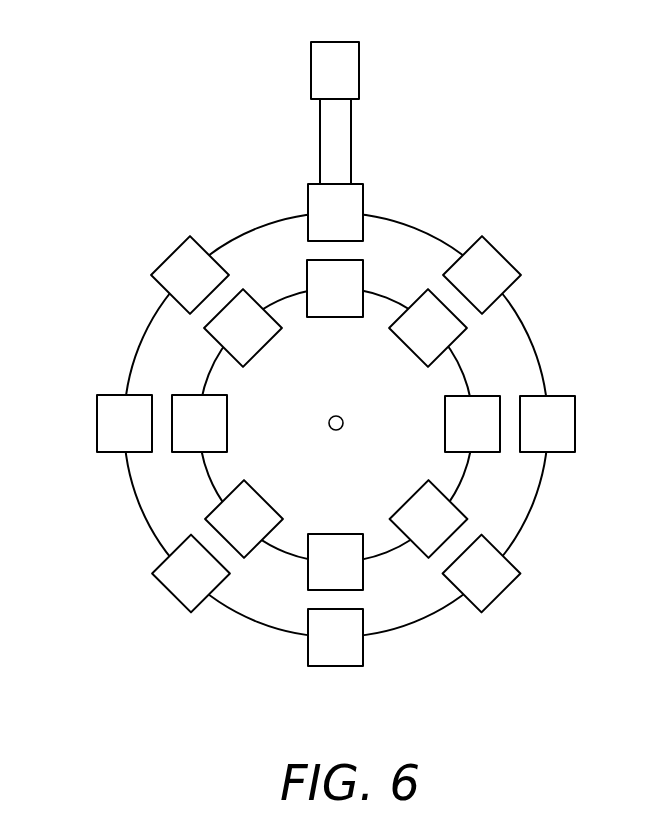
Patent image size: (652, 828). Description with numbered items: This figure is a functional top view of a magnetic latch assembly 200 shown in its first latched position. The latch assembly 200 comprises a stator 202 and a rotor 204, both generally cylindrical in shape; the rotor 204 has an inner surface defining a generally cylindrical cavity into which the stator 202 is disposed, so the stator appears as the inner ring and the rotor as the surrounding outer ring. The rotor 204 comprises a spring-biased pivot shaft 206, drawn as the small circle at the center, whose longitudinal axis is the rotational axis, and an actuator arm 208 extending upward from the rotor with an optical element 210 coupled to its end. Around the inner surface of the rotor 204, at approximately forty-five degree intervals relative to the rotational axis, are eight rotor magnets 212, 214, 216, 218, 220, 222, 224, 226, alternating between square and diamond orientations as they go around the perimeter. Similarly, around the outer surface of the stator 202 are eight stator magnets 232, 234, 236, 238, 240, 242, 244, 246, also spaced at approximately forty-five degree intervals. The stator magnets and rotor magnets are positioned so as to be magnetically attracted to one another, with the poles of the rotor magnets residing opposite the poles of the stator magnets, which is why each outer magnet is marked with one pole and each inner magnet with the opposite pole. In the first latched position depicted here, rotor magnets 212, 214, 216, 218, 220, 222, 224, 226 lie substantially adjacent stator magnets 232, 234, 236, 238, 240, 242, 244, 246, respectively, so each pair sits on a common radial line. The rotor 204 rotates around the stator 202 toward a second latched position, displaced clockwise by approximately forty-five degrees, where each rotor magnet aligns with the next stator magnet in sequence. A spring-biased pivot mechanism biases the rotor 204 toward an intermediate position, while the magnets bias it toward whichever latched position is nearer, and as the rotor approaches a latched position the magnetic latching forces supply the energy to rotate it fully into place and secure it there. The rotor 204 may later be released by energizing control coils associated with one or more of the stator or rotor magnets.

The magnetic latch assembly 200 is at (585, 122).
The stator 202 is at (412, 442).
The rotor 204 is at (534, 339).
The spring-biased pivot shaft 206 is at (336, 415).
The actuator arm 208 is at (320, 143).
The optical element 210 is at (311, 69).
The rotor magnet 212 is at (358, 184).
The rotor magnet 214 is at (176, 253).
The rotor magnet 216 is at (97, 425).
The rotor magnet 218 is at (172, 597).
The rotor magnet 220 is at (340, 666).
The rotor magnet 222 is at (503, 596).
The rotor magnet 224 is at (562, 453).
The rotor magnet 226 is at (500, 252).
The stator magnet 232 is at (336, 317).
The stator magnet 234 is at (214, 341).
The stator magnet 236 is at (228, 423).
The stator magnet 238 is at (246, 558).
The stator magnet 240 is at (337, 534).
The stator magnet 242 is at (426, 559).
The stator magnet 244 is at (479, 453).
The stator magnet 246 is at (461, 342).